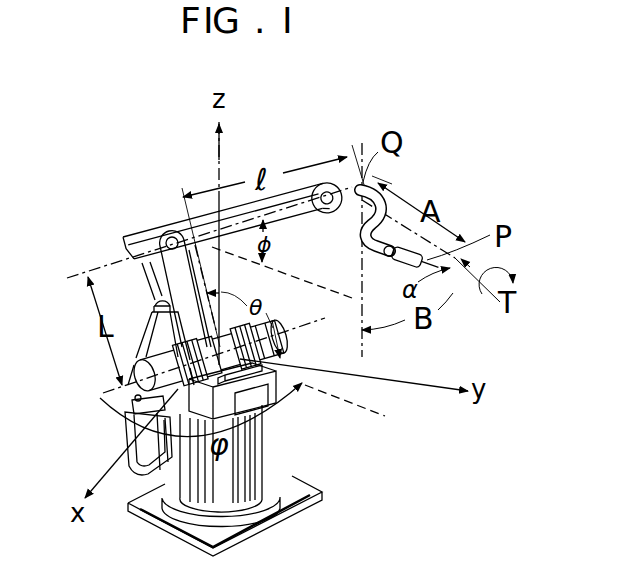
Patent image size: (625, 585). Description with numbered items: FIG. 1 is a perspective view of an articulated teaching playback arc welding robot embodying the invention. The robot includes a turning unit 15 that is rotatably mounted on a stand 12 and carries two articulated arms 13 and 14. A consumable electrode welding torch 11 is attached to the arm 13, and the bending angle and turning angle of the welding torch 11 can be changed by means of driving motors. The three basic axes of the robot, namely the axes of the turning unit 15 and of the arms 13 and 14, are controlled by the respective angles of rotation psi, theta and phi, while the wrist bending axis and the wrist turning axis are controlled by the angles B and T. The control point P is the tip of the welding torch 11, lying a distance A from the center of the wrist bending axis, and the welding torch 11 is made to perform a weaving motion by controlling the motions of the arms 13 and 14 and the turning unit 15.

The consumable electrode welding torch 11 is at (397, 263).
The stand 12 is at (260, 444).
The arm 13 is at (322, 213).
The arm 14 is at (177, 280).
The turning unit 15 is at (130, 411).